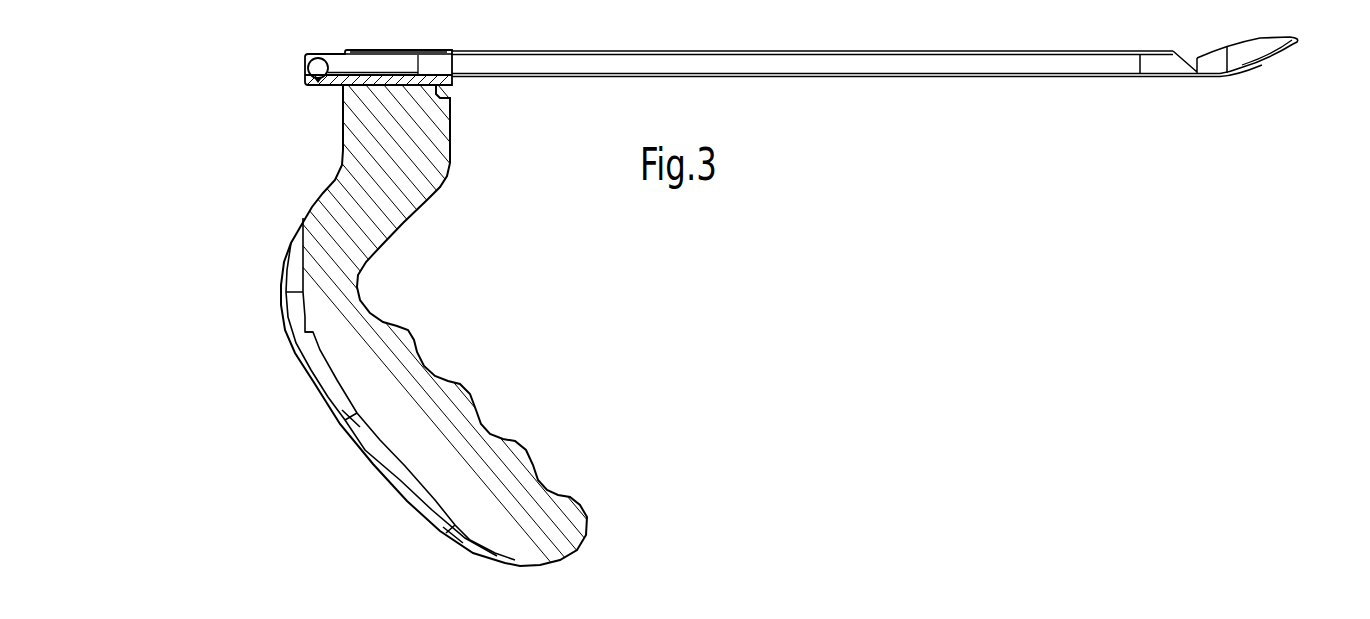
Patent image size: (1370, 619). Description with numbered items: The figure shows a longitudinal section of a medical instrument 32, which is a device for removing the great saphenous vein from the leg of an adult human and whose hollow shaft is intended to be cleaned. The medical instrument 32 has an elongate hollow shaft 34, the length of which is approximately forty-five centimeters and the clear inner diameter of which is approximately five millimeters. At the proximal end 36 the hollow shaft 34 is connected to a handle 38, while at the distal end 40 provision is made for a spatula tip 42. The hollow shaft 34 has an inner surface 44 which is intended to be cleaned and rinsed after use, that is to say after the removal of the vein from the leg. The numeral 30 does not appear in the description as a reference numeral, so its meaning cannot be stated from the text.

The inner shaft rod 30 is at (1062, 65).
The medical instrument 32 is at (1032, 127).
The hollow shaft 34 is at (537, 53).
The proximal end 36 is at (397, 50).
The handle 38 is at (458, 402).
The distal end 40 is at (1181, 67).
The spatula tip 42 is at (1260, 63).
The inner surface 44 is at (972, 58).